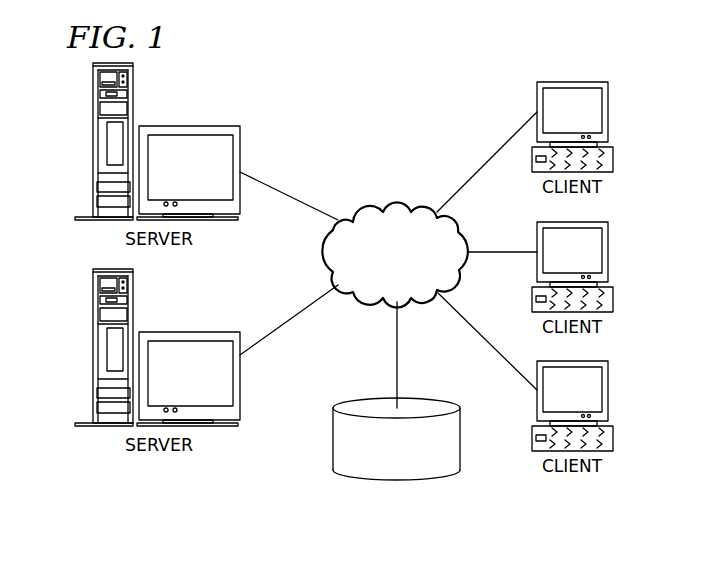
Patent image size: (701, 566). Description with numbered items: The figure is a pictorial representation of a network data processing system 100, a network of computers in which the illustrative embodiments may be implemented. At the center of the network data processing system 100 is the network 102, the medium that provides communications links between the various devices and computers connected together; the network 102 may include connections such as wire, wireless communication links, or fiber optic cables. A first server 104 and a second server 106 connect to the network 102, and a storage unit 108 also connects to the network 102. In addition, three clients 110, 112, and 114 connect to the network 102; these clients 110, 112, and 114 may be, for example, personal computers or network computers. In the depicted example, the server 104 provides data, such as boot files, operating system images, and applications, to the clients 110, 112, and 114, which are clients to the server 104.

The network data processing system 100 is at (447, 91).
The network 102 is at (368, 205).
The server 104 is at (93, 142).
The server 106 is at (93, 348).
The storage unit 108 is at (382, 480).
The client 110 is at (608, 112).
The client 112 is at (608, 252).
The client 114 is at (608, 392).